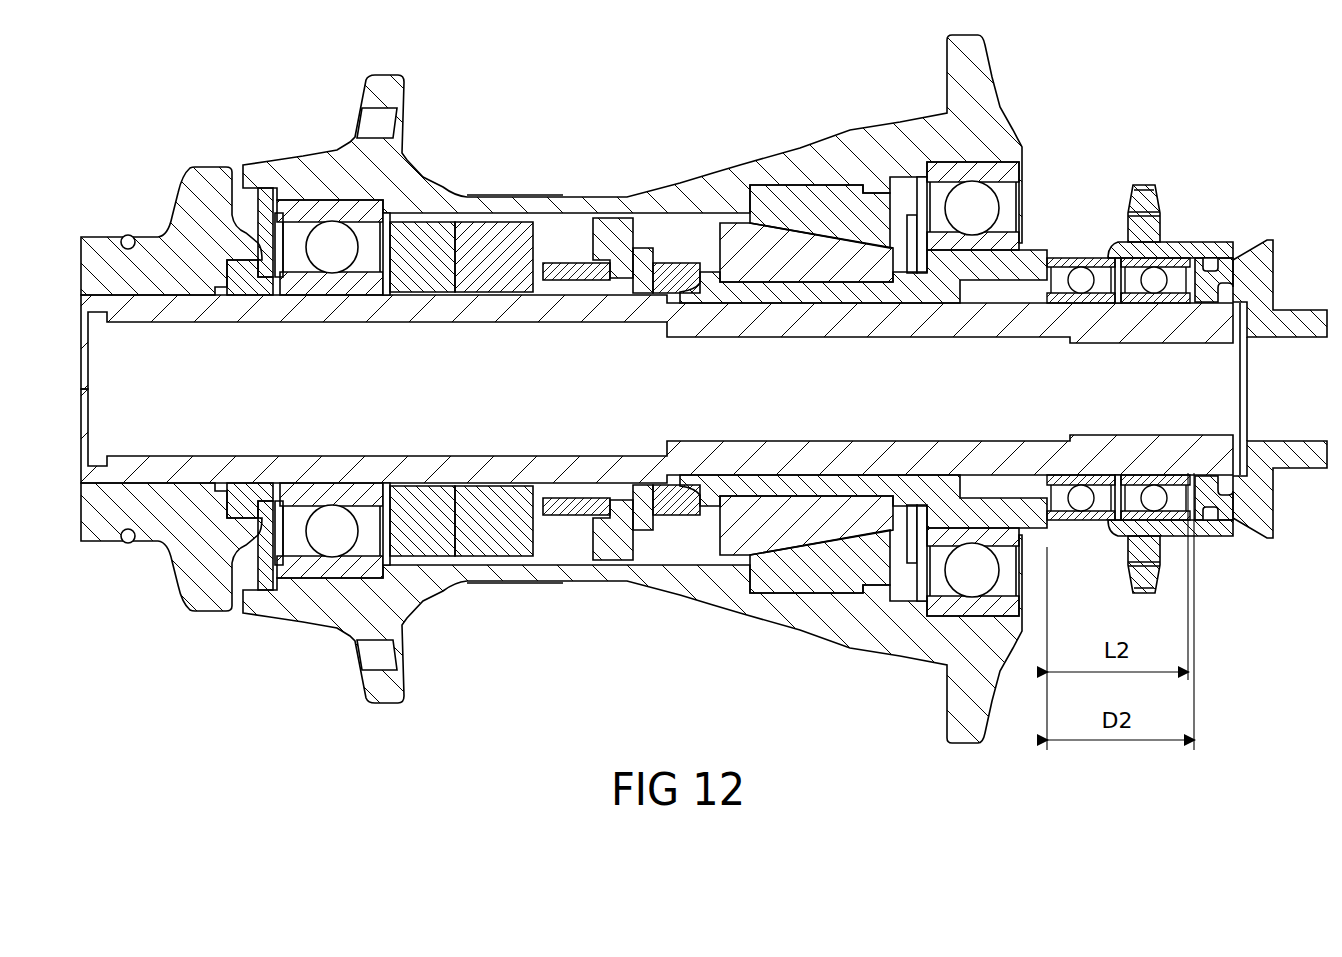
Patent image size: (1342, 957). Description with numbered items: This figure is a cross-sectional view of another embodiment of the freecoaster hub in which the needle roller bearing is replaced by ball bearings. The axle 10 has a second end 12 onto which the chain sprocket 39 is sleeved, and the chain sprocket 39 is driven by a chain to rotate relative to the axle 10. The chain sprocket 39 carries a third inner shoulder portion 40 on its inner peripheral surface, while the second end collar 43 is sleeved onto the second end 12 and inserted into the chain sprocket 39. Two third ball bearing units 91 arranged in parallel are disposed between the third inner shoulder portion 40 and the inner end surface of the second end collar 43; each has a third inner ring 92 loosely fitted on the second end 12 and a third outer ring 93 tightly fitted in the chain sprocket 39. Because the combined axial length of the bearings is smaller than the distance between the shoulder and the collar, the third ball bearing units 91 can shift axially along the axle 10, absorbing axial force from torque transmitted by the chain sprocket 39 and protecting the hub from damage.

The axle 10 is at (1256, 461).
The second end 12 is at (1228, 320).
The chain sprocket 39 is at (1156, 178).
The third inner shoulder portion 40 is at (1030, 252).
The second end collar 43 is at (1309, 325).
The third ball bearing units 91 is at (1179, 256).
The third inner ring 92 is at (1061, 298).
The third outer ring 93 is at (1100, 265).